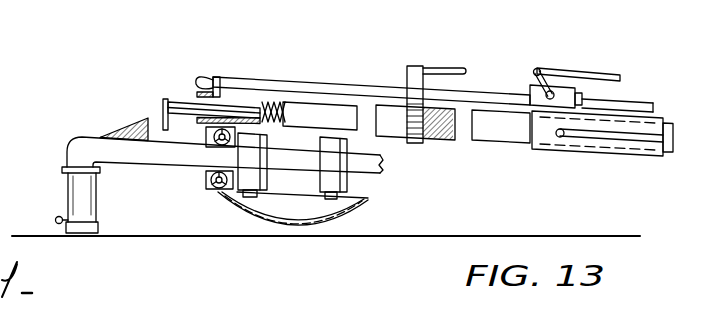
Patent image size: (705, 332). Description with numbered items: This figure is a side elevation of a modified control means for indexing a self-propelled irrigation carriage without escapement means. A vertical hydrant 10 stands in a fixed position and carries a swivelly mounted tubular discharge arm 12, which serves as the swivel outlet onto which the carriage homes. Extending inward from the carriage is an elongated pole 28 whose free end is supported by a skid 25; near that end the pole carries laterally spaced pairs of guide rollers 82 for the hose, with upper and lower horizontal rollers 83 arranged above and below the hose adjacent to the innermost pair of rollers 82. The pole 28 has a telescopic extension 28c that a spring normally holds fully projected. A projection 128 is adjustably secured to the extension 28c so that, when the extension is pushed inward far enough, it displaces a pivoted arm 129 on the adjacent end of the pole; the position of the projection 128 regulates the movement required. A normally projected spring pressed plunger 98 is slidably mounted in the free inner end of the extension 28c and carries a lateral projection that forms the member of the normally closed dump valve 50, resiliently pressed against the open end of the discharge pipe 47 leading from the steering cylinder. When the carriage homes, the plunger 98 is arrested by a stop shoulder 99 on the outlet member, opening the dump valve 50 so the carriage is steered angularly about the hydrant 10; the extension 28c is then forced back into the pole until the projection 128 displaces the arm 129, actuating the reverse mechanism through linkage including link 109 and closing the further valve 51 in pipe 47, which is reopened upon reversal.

The vertical hydrant 10 is at (60, 189).
The tubular discharge arm 12 is at (151, 156).
The skid 25 is at (233, 200).
The pole 28 is at (603, 143).
The telescopic extension 28c is at (323, 108).
The discharge pipe 47 is at (205, 75).
The dump valve 50 is at (221, 78).
The valve 51 is at (600, 90).
The guide rollers 82 is at (331, 147).
The horizontal rollers 83 is at (215, 146).
The spring pressed plunger 98 is at (172, 100).
The stop shoulder 99 is at (122, 134).
The link 109 is at (582, 68).
The projection 128 is at (450, 68).
The pivoted arm 129 is at (532, 70).